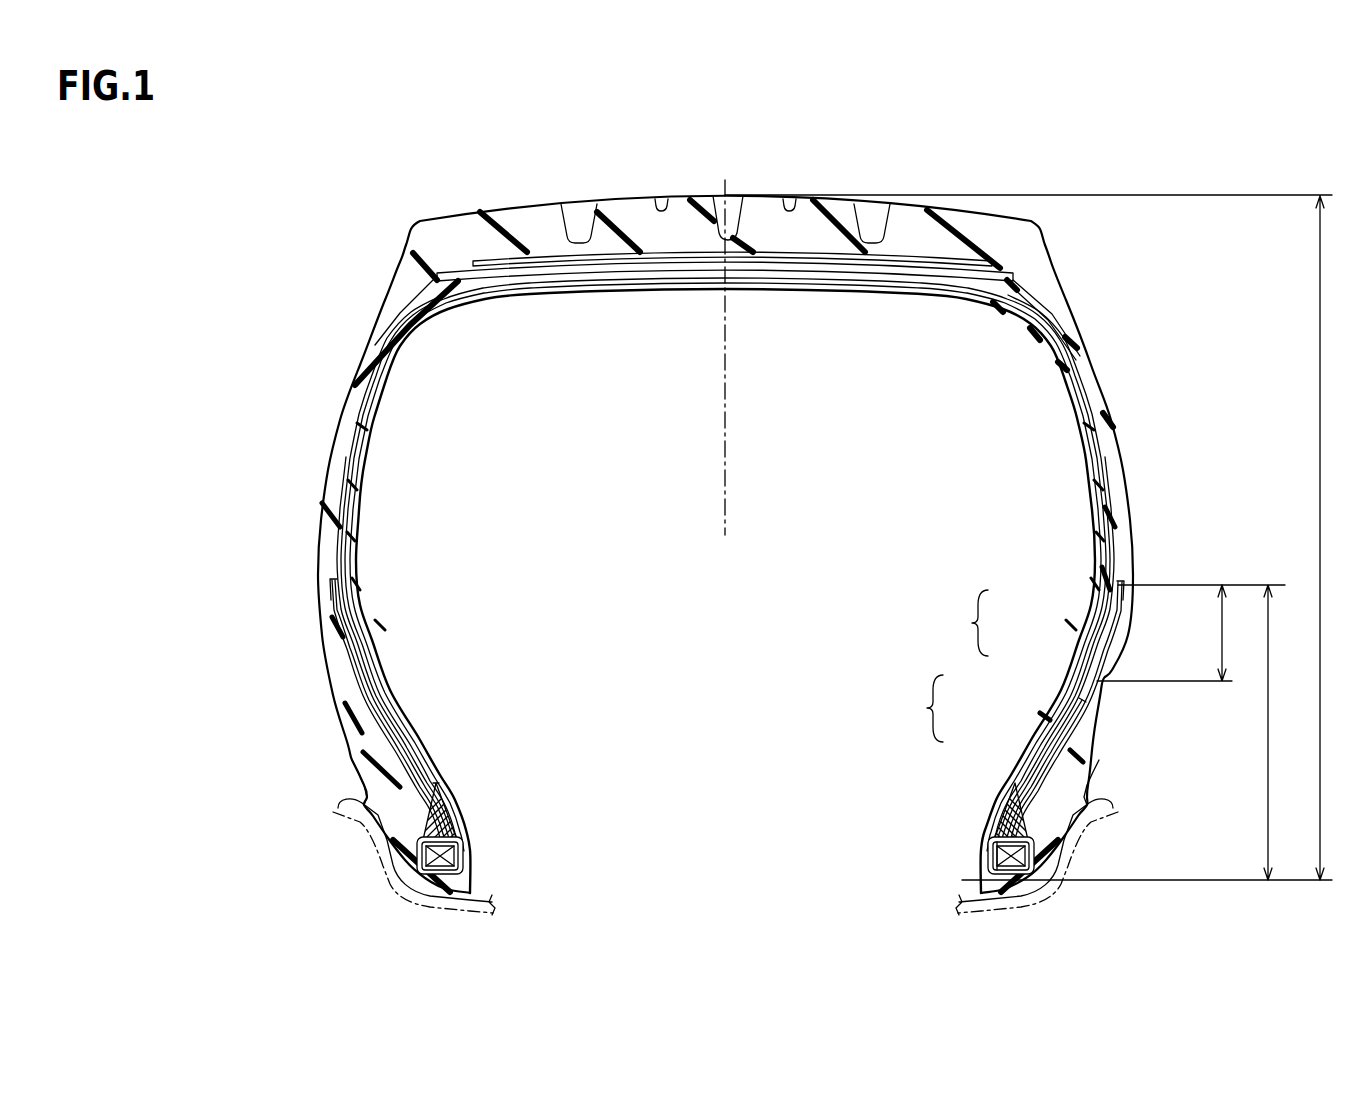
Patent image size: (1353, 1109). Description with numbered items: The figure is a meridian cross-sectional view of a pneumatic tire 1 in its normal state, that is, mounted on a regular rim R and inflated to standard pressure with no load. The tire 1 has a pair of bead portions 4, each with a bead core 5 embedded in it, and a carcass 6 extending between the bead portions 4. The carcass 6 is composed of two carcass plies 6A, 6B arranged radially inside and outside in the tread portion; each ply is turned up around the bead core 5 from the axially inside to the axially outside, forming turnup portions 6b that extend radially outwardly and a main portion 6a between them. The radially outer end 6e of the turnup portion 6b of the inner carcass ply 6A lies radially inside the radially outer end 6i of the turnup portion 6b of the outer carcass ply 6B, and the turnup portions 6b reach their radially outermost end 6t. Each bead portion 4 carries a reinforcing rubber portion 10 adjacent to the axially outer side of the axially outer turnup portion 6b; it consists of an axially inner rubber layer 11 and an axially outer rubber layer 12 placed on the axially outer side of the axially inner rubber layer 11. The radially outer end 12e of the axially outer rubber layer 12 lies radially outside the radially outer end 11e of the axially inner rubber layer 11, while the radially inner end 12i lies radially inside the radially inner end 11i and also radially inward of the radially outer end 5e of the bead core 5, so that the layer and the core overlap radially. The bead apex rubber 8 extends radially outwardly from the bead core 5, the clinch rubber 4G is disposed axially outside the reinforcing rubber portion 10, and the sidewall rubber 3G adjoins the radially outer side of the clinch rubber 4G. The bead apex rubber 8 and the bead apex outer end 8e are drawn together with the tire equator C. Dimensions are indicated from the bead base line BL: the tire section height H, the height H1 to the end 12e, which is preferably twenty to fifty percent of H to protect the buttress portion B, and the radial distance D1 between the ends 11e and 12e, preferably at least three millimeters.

The pneumatic tire 1 is at (1171, 164).
The sidewall rubber 3G is at (335, 482).
The bead portion 4 is at (325, 742).
The clinch rubber 4G is at (362, 776).
The bead core 5 is at (447, 853).
The radially outer end of bead core 5e is at (1000, 845).
The carcass 6 is at (1082, 562).
The inner carcass ply 6A is at (960, 623).
The outer carcass ply 6B is at (915, 708).
The main portion 6a is at (1095, 642).
The turnup portion 6b is at (1100, 660).
The radially outer end of turnup portion of inner carcass ply 6e is at (333, 582).
The radially outer end of turnup portion of outer carcass ply 6i is at (335, 576).
The radially outermost end of turnup portions 6t is at (1117, 582).
The bead apex rubber 8 is at (437, 822).
The outer end of bead apex 8e is at (430, 752).
The reinforcing rubber portion 10 is at (340, 700).
The axially inner rubber layer 11 is at (1060, 798).
The radially outer end of axially inner rubber layer 11e is at (1097, 688).
The radially inner end of axially inner rubber layer 11i is at (1045, 860).
The axially outer rubber layer 12 is at (1080, 780).
The radially outer end of axially outer rubber layer 12e is at (1125, 585).
The radially inner end of axially outer rubber layer 12i is at (1033, 885).
The buttress portion B is at (1129, 299).
The bead base line BL is at (1185, 882).
The tire equator C is at (725, 342).
The regular rim R is at (428, 919).
The tire section height H is at (1035, 537).
The height H1 is at (1217, 732).
The distance D1 is at (1181, 633).